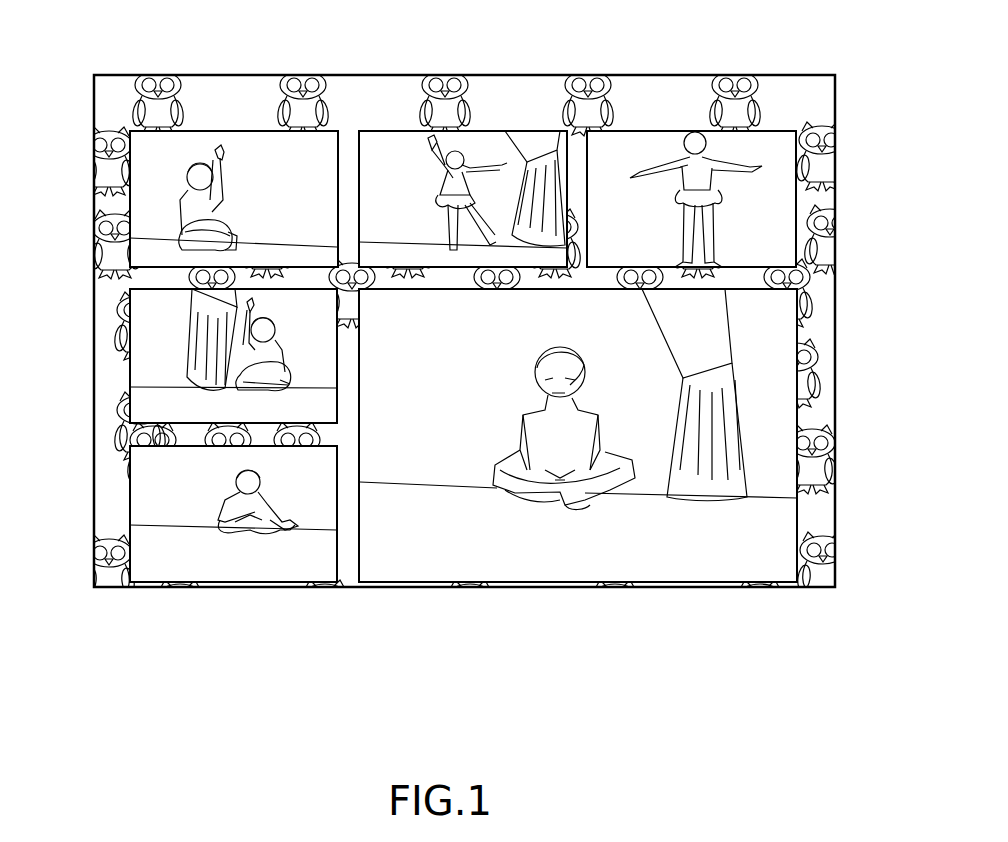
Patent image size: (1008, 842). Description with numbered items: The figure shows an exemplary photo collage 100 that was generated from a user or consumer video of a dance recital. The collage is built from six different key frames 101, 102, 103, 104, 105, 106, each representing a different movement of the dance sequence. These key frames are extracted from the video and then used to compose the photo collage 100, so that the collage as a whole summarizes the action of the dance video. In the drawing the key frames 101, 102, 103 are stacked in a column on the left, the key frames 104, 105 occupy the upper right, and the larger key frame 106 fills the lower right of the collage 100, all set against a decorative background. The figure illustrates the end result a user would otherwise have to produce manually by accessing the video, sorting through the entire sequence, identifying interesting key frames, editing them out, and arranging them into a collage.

The photo collage 100 is at (170, 612).
The key frame 101 is at (185, 483).
The key frame 102 is at (157, 332).
The key frame 103 is at (157, 165).
The key frame 104 is at (509, 180).
The key frame 105 is at (768, 198).
The key frame 106 is at (675, 452).